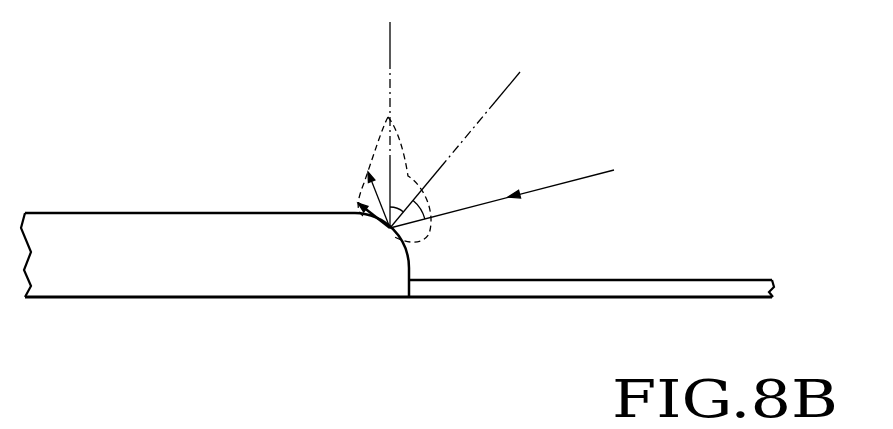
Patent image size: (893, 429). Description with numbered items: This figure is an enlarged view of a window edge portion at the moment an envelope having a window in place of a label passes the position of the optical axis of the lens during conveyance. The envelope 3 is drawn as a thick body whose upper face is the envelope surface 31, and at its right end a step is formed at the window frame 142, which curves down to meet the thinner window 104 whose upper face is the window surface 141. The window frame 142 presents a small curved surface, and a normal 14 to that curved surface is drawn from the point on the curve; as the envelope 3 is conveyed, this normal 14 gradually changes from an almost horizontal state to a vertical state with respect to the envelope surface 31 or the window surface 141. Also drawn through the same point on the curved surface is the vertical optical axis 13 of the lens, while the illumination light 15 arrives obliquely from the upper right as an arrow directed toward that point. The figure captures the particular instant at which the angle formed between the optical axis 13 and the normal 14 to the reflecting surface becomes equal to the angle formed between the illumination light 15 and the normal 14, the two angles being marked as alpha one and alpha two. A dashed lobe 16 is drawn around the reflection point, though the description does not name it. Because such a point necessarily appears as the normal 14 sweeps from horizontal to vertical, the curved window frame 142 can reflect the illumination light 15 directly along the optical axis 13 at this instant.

The envelope 3 is at (212, 260).
The envelope surface 31 is at (172, 212).
The window frame 142 is at (403, 243).
The window 104 is at (712, 268).
The window surface 141 is at (614, 279).
The optical axis 13 is at (389, 58).
The normal 14 is at (500, 98).
The illumination light 15 is at (562, 183).
The plume / melted zone 16 is at (383, 157).